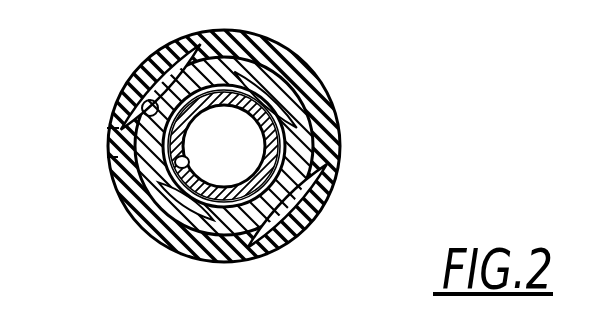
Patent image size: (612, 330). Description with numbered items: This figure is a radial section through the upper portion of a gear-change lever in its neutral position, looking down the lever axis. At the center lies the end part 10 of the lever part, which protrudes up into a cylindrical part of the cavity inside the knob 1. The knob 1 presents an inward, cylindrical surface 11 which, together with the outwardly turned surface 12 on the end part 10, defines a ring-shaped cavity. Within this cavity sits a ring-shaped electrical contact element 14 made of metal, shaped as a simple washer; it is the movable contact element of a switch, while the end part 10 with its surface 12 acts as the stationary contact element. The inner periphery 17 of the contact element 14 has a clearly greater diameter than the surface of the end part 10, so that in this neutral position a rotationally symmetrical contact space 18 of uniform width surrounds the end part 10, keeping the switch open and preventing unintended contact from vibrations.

The knob 1 is at (285, 165).
The end part 10 is at (280, 167).
The cylindrical surface 11 is at (148, 118).
The outwardly turned surface 12 is at (278, 141).
The contact element 14 is at (293, 121).
The inner periphery 17 is at (176, 160).
The contact space 18 is at (280, 112).